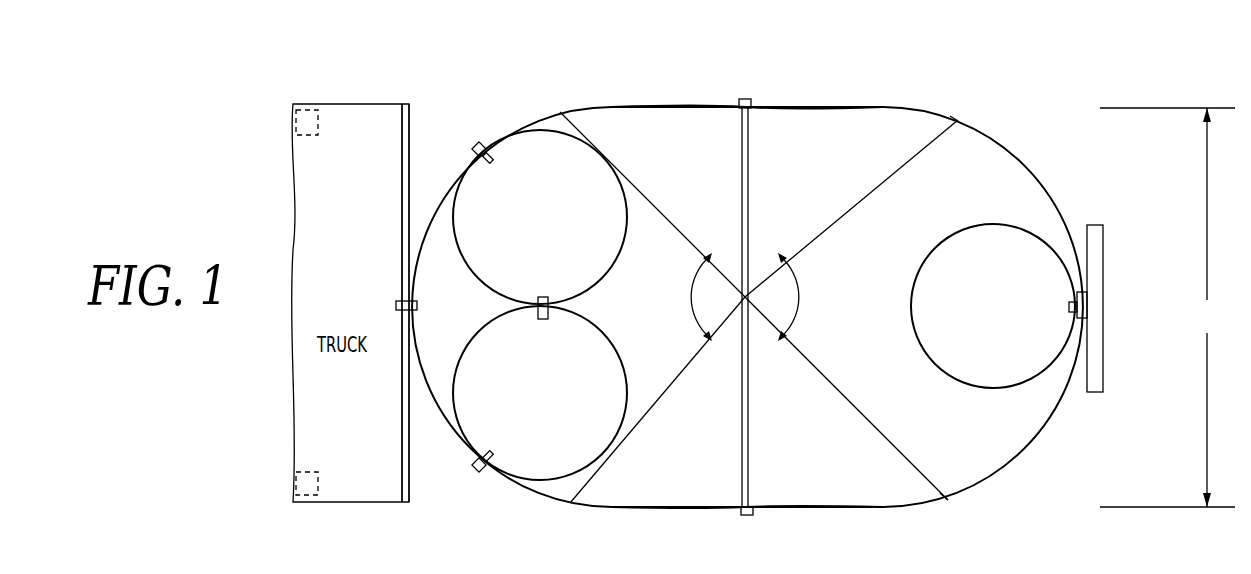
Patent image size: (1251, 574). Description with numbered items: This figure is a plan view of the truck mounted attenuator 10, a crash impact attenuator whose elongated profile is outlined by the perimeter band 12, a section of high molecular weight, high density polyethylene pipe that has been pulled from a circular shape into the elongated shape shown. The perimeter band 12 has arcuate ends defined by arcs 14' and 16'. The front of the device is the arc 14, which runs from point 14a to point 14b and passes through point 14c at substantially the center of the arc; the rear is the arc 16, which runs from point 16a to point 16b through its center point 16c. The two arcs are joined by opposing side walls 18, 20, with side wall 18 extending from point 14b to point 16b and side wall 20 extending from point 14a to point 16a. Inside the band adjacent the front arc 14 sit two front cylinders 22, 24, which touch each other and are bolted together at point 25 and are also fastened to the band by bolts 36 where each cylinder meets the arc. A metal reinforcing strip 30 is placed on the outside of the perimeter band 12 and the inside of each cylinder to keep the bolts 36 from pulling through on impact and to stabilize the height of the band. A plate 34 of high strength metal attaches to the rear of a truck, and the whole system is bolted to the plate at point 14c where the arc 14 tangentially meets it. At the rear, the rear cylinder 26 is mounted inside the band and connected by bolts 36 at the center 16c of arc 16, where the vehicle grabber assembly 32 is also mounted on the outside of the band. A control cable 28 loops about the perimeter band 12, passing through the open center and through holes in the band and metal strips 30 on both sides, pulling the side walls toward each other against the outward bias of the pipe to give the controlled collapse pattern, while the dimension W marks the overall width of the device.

The truck mounted attenuator 10 is at (900, 90).
The perimeter band 12 is at (820, 108).
The front arc 14 is at (512, 307).
The point 14a is at (570, 506).
The point 14b is at (560, 111).
The center point of front arc 14c is at (417, 303).
The arc 14' is at (676, 297).
The rear arc 16 is at (994, 307).
The point 16a is at (948, 500).
The point 16b is at (960, 121).
The center point of rear arc 16c is at (1077, 297).
The arc 16' is at (827, 297).
The side wall 18 is at (600, 107).
The side wall 20 is at (683, 508).
The front cylinder 22 is at (455, 243).
The front cylinder 24 is at (477, 333).
The point of tangential engagement 25 is at (544, 296).
The rear cylinder 26 is at (920, 272).
The control cable 28 is at (750, 192).
The metal reinforcing strip 30 is at (748, 100).
The vehicle grabber assembly 32 is at (1098, 255).
The plate 34 is at (402, 175).
The bolts 36 is at (492, 162).
The width W is at (1167, 307).